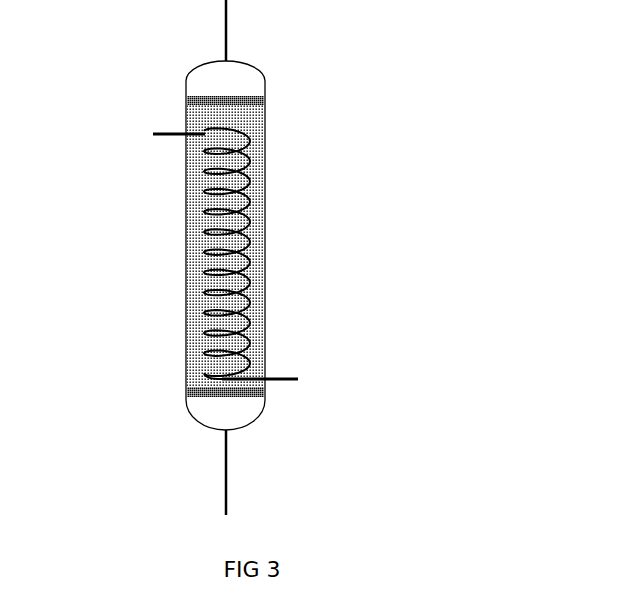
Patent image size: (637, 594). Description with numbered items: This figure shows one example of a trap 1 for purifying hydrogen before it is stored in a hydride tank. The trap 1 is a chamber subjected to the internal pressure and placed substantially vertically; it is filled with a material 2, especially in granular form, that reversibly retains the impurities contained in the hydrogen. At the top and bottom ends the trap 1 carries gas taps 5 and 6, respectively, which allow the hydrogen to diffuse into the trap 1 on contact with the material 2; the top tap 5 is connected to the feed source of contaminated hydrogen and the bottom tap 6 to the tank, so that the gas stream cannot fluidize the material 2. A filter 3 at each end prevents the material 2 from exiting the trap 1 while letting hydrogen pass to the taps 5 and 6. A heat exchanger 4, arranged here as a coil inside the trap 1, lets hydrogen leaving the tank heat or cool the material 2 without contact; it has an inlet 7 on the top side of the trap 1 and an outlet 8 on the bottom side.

The trap 1 is at (265, 176).
The material 2 is at (192, 218).
The filter 3 is at (187, 402).
The heat exchange element 4 is at (230, 268).
The gas tap 5 is at (226, 42).
The gas tap 6 is at (226, 458).
The inlet 7 is at (153, 135).
The outlet 8 is at (298, 378).